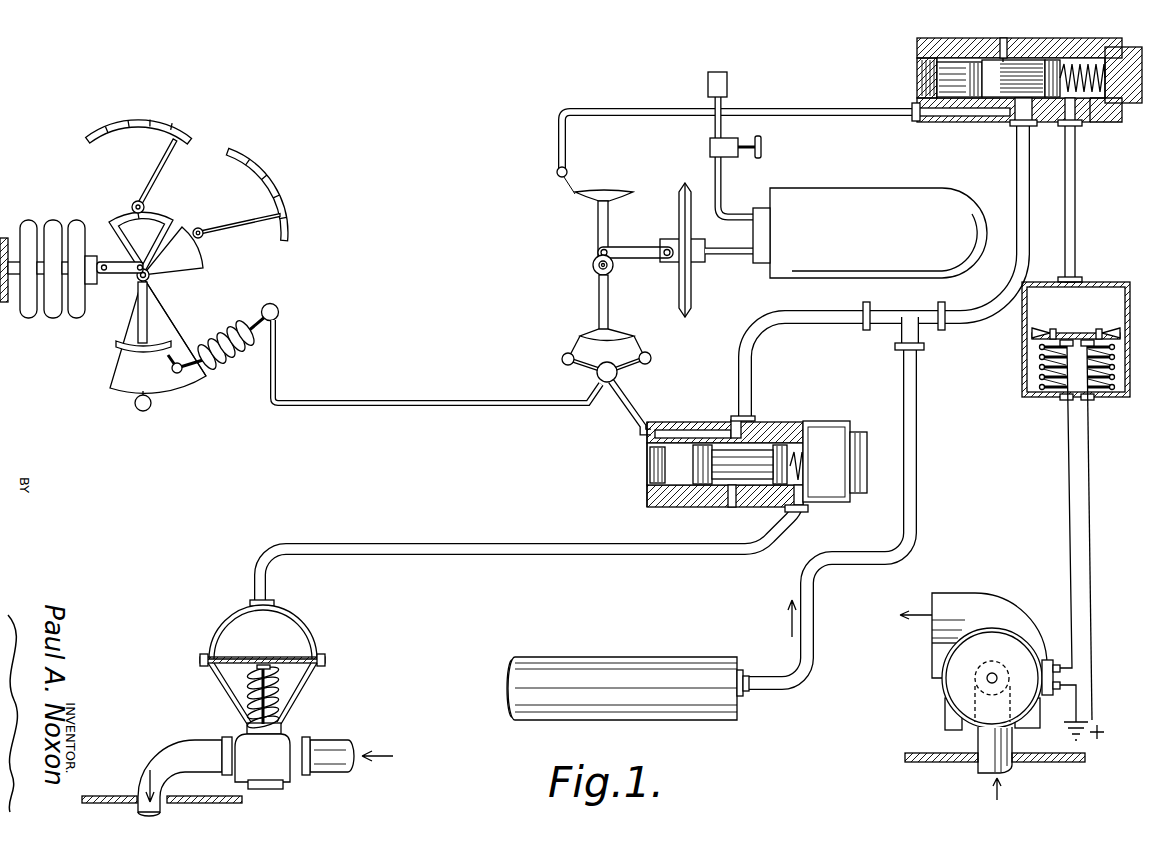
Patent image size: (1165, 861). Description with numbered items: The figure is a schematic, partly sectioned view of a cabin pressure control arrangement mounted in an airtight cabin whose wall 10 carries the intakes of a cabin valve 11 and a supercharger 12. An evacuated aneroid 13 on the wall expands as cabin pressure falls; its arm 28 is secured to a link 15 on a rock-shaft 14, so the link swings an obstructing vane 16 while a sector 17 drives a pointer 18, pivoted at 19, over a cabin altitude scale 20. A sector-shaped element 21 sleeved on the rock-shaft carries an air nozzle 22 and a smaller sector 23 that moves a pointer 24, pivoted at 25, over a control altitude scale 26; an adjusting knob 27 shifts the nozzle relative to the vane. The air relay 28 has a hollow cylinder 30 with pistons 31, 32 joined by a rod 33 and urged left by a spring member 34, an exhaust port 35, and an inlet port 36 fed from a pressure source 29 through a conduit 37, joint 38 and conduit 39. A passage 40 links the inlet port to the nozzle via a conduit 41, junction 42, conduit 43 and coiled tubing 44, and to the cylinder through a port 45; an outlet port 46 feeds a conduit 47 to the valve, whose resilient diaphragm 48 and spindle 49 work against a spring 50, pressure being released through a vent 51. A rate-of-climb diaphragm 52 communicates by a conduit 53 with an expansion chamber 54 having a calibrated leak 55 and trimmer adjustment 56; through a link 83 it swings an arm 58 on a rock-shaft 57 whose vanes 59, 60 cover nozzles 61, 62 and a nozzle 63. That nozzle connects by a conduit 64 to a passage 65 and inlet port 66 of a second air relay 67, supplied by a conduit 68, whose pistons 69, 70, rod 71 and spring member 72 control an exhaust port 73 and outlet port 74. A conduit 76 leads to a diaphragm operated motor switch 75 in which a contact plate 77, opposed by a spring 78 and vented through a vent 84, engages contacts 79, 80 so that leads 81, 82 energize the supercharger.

The wall 10 is at (125, 796).
The cabin valve 11 is at (290, 765).
The supercharger 12 is at (958, 694).
The aneroid 13 is at (55, 318).
The rock-shaft 14 is at (150, 276).
The link 15 is at (138, 318).
The obstructing vane 16 is at (130, 347).
The sector 17 is at (160, 223).
The pointer 18 is at (160, 168).
The pivot 19 is at (132, 204).
The scale 20 is at (93, 147).
The sector-shaped element 21 is at (165, 318).
The air nozzle 22 is at (170, 385).
The smaller sector 23 is at (196, 256).
The pointer 24 is at (238, 225).
The pivot 25 is at (199, 228).
The second scale 26 is at (280, 250).
The adjusting knob 27 is at (141, 411).
The arm / air relay 28 is at (120, 273).
The pressure source 29 is at (652, 659).
The hollow cylinder 30 is at (661, 507).
The piston 31 is at (660, 469).
The piston 32 is at (770, 507).
The rod 33 is at (736, 428).
The spring member 34 is at (800, 465).
The exhaust port 35 is at (731, 507).
The inlet port 36 is at (756, 420).
The conduit 37 is at (765, 312).
The joint 38 is at (917, 310).
The conduit 39 is at (918, 462).
The passage 40 is at (702, 430).
The conduit 41 is at (628, 403).
The junction 42 is at (598, 375).
The conduit 43 is at (417, 400).
The coiled tubing 44 is at (232, 352).
The port 45 is at (662, 427).
The outlet port 46 is at (806, 511).
The conduit 47 is at (529, 548).
The resilient diaphragm 48 is at (291, 658).
The spindle 49 is at (282, 693).
The spring 50 is at (252, 683).
The vent 51 is at (860, 462).
The diaphragm 52 is at (678, 200).
The conduit 53 is at (729, 256).
The expansion chamber 54 is at (843, 235).
The calibrated leak 55 is at (728, 80).
The trimmer adjustment 56 is at (740, 152).
The rock-shaft 57 is at (593, 267).
The arm 58 is at (609, 283).
The obstructing vane 59 is at (594, 329).
The obstructing vane 60 is at (606, 190).
The nozzle 61 is at (578, 339).
The nozzle 62 is at (641, 345).
The nozzle 63 is at (560, 180).
The conduit 64 is at (807, 110).
The passage 65 is at (985, 120).
The inlet port 66 is at (1019, 126).
The second air relay 67 is at (910, 48).
The conduit 68 is at (1017, 183).
The piston 69 is at (960, 62).
The piston 70 is at (1050, 60).
The rod 71 is at (1015, 62).
The spring member 72 is at (1082, 62).
The exhaust port 73 is at (1003, 38).
The outlet port 74 is at (1100, 122).
The diaphragm operated motor switch 75 is at (1105, 276).
The conduit 76 is at (1076, 190).
The contact plate 77 is at (1078, 330).
The spring 78 is at (1040, 370).
The contact 79 is at (1055, 330).
The contact 80 is at (1100, 330).
The lead 81 is at (1068, 470).
The lead 82 is at (1090, 470).
The link 83 is at (630, 247).
The vent 84 is at (1122, 46).